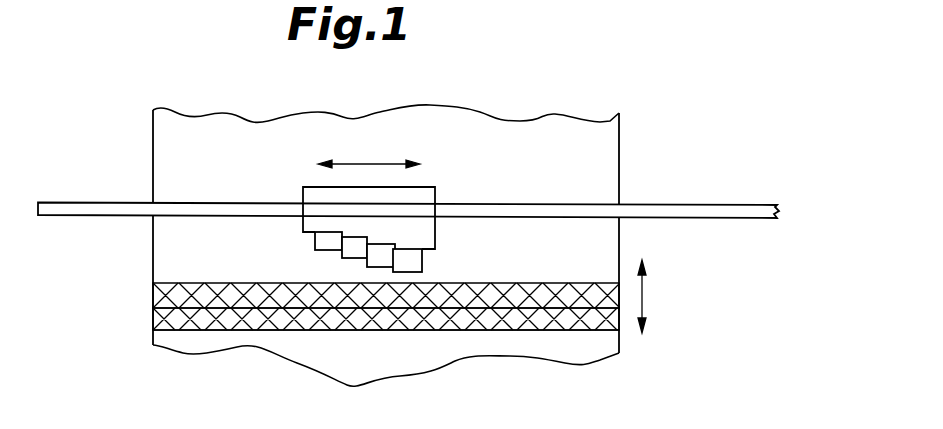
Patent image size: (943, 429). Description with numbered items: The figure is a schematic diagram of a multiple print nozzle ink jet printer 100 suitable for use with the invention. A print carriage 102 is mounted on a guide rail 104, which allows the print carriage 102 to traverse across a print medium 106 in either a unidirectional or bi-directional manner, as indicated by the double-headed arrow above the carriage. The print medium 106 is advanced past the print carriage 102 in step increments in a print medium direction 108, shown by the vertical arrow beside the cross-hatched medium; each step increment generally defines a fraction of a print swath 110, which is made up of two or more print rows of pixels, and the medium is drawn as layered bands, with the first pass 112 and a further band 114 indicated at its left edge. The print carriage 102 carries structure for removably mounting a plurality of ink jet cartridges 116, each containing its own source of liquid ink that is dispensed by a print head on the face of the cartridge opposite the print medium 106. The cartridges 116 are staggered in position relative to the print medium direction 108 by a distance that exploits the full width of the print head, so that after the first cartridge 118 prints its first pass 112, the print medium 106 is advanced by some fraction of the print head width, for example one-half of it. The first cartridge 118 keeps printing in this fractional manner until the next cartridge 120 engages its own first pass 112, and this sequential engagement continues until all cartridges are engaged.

The multiple print nozzle ink jet printer 100 is at (421, 221).
The print carriage 102 is at (437, 195).
The guide rail 104 is at (692, 205).
The print medium 106 is at (592, 362).
The print medium direction 108 is at (642, 298).
The print swath 110 is at (618, 325).
The first pass 112 is at (150, 320).
The upper layer 114 is at (157, 297).
The ink jet cartridges 116 is at (423, 263).
The first cartridge 118 is at (315, 248).
The next cartridge 120 is at (352, 258).